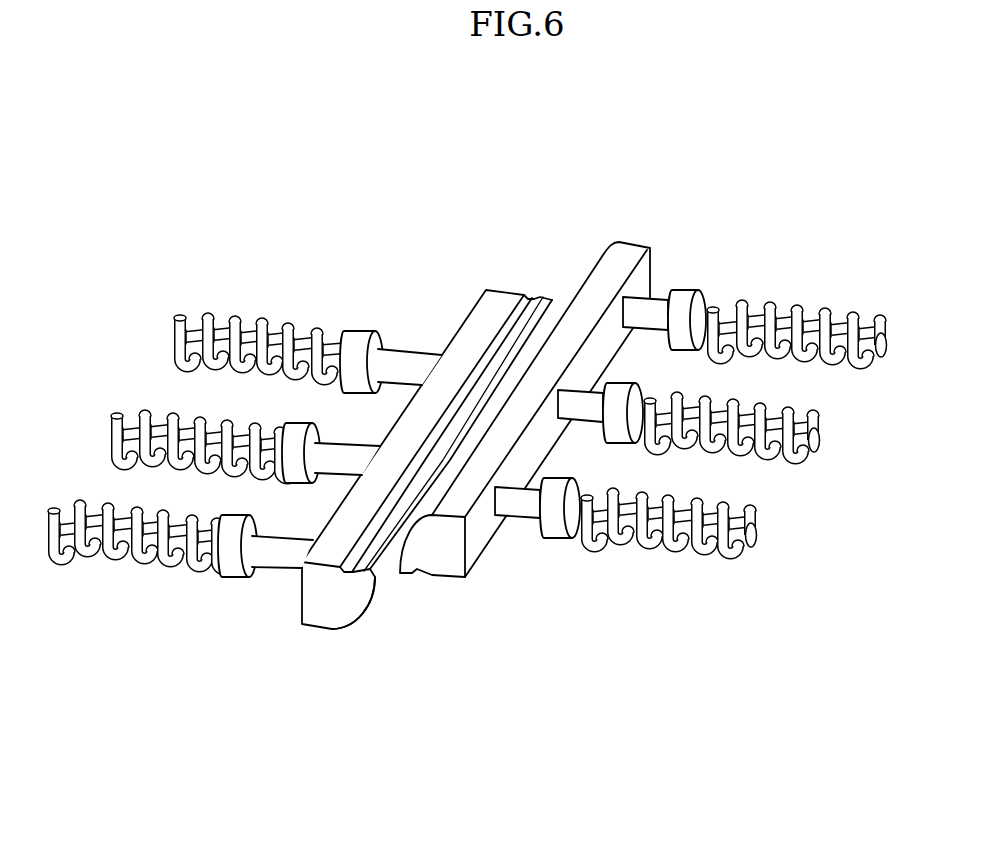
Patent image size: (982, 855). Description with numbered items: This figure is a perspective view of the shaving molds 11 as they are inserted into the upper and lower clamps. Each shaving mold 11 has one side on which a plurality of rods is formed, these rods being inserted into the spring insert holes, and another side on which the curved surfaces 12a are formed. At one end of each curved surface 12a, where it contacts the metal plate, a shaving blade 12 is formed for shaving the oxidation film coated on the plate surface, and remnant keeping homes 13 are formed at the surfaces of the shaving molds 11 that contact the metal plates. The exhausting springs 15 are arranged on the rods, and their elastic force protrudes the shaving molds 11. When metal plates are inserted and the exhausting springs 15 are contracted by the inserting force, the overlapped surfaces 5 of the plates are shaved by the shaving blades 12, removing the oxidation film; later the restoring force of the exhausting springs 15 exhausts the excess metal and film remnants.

The overlapped surfaces 5 is at (467, 463).
The shaving mold 11 is at (333, 597).
The shaving blade 12 is at (542, 298).
The curved surface 12a is at (353, 605).
The remnant keeping home 13 is at (502, 330).
The exhausting spring 15 is at (266, 318).